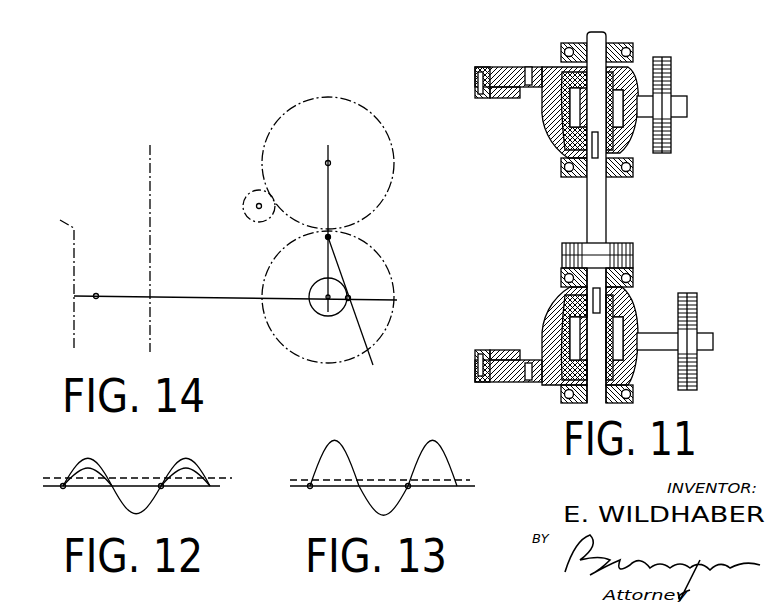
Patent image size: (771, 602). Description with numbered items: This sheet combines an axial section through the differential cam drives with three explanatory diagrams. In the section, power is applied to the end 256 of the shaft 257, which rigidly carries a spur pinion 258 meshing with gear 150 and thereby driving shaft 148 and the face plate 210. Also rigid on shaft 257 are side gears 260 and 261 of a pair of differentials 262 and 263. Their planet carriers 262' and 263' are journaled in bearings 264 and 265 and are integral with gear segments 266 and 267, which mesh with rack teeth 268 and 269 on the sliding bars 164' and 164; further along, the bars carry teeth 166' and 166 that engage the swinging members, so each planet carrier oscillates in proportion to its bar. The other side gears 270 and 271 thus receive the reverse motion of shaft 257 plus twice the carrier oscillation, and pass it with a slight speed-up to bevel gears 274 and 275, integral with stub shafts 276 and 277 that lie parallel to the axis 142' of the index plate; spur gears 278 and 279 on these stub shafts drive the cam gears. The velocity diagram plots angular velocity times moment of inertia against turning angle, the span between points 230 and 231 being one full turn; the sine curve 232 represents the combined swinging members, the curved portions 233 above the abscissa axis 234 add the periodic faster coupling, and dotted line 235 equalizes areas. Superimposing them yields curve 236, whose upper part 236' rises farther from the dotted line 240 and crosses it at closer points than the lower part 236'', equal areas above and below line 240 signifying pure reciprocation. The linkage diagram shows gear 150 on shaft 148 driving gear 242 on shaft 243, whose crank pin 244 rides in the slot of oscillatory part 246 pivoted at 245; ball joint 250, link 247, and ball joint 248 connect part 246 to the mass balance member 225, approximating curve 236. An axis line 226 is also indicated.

In FIG. 14, the axis of the index plate 142' is at (177, 245).
In FIG. 14, the shaft 148 is at (331, 164).
In FIG. 14, the gear 150 is at (388, 192).
In FIG. 11, the sliding bar 164 is at (483, 382).
In FIG. 11, the sliding bar 164' is at (460, 85).
In FIG. 11, the teeth 166 is at (462, 369).
In FIG. 11, the teeth 166' is at (478, 114).
In FIG. 14, the face plate 210 is at (355, 341).
In FIG. 14, the mass balance member 225 is at (78, 292).
In FIG. 14, the axis line 226 is at (71, 272).
In FIG. 12, the point 230 is at (63, 483).
In FIG. 12, the point 231 is at (160, 453).
In FIG. 12, the sine curve 232 is at (118, 498).
In FIG. 12, the curved portions 233 is at (95, 453).
In FIG. 12, the abscissa axis 234 is at (200, 487).
In FIG. 13, the abscissa axis 234 is at (470, 487).
In FIG. 12, the dotted line 235 is at (211, 478).
In FIG. 13, the curve 236 is at (373, 466).
In FIG. 13, the upper part of curve 236' is at (375, 447).
In FIG. 13, the lower part of curve 236'' is at (433, 504).
In FIG. 13, the dotted line 240 is at (303, 478).
In FIG. 14, the gear 242 is at (388, 262).
In FIG. 14, the shaft 243 is at (327, 296).
In FIG. 14, the crank pin 244 is at (349, 297).
In FIG. 14, the pivot 245 is at (340, 236).
In FIG. 14, the oscillatory part 246 is at (367, 337).
In FIG. 14, the link 247 is at (205, 298).
In FIG. 14, the ball joint 248 is at (94, 300).
In FIG. 14, the ball joint 250 is at (395, 302).
In FIG. 11, the end of shaft 256 is at (597, 31).
In FIG. 14, the shaft 257 is at (257, 207).
In FIG. 11, the shaft 257 is at (591, 218).
In FIG. 14, the spur pinion 258 is at (249, 198).
In FIG. 11, the spur pinion 258 is at (562, 248).
In FIG. 11, the side gear 260 is at (566, 154).
In FIG. 11, the side gear 261 is at (570, 292).
In FIG. 11, the differential 262 is at (539, 115).
In FIG. 11, the planet carrier 262' is at (542, 111).
In FIG. 11, the differential 263 is at (546, 336).
In FIG. 11, the planet carrier 263' is at (540, 337).
In FIG. 11, the bearings 264 is at (628, 50).
In FIG. 11, the bearings 265 is at (631, 277).
In FIG. 11, the gear segment 266 is at (536, 54).
In FIG. 11, the gear segment 267 is at (517, 380).
In FIG. 11, the rack teeth 268 is at (524, 70).
In FIG. 11, the rack teeth 269 is at (535, 360).
In FIG. 11, the side gear 270 is at (632, 67).
In FIG. 11, the side gear 271 is at (556, 380).
In FIG. 11, the bevel gear 274 is at (638, 127).
In FIG. 11, the bevel gear 275 is at (633, 318).
In FIG. 11, the stub shaft 276 is at (680, 105).
In FIG. 11, the stub shaft 277 is at (703, 334).
In FIG. 11, the spur gear 278 is at (670, 74).
In FIG. 11, the spur gear 279 is at (698, 372).